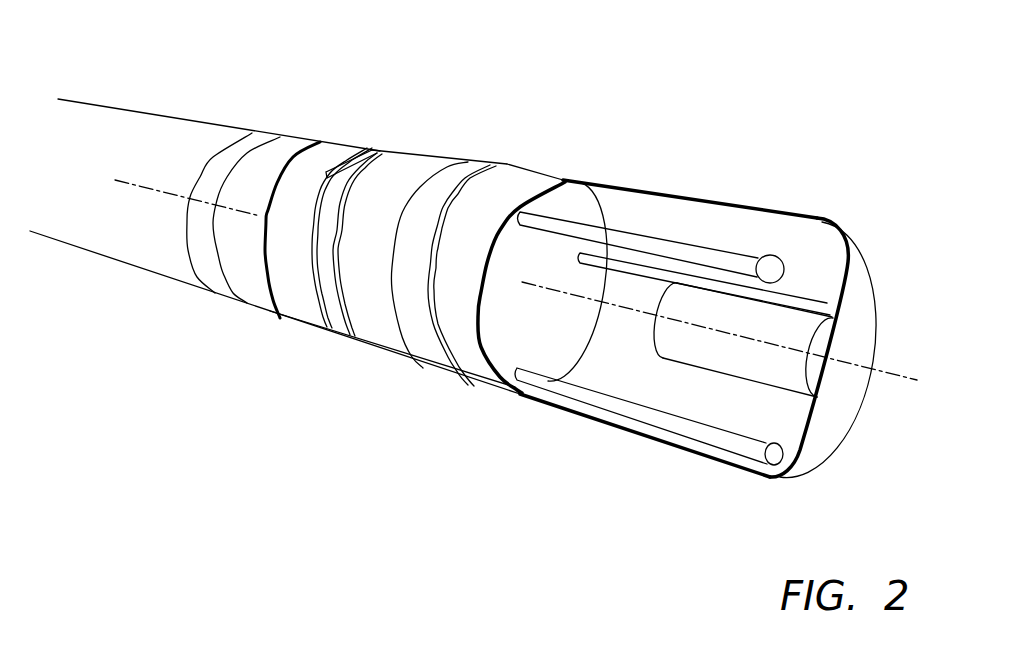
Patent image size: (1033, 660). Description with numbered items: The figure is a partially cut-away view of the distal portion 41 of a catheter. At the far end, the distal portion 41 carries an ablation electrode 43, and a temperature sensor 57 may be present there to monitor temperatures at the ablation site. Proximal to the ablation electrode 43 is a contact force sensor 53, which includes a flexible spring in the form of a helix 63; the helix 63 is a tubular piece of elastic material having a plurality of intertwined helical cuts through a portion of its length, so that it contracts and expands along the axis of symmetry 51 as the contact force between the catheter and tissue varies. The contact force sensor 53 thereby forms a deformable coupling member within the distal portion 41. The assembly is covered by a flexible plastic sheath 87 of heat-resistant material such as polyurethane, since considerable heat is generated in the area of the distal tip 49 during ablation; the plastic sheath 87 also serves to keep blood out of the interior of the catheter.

The distal portion 41 is at (94, 77).
The ablation electrode 43 is at (505, 162).
The distal tip 49 is at (857, 262).
The axis of symmetry 51 is at (883, 373).
The contact force sensor 53 is at (382, 328).
The temperature sensor 57 is at (858, 224).
The helix 63 is at (402, 160).
The flexible plastic sheath 87 is at (332, 334).